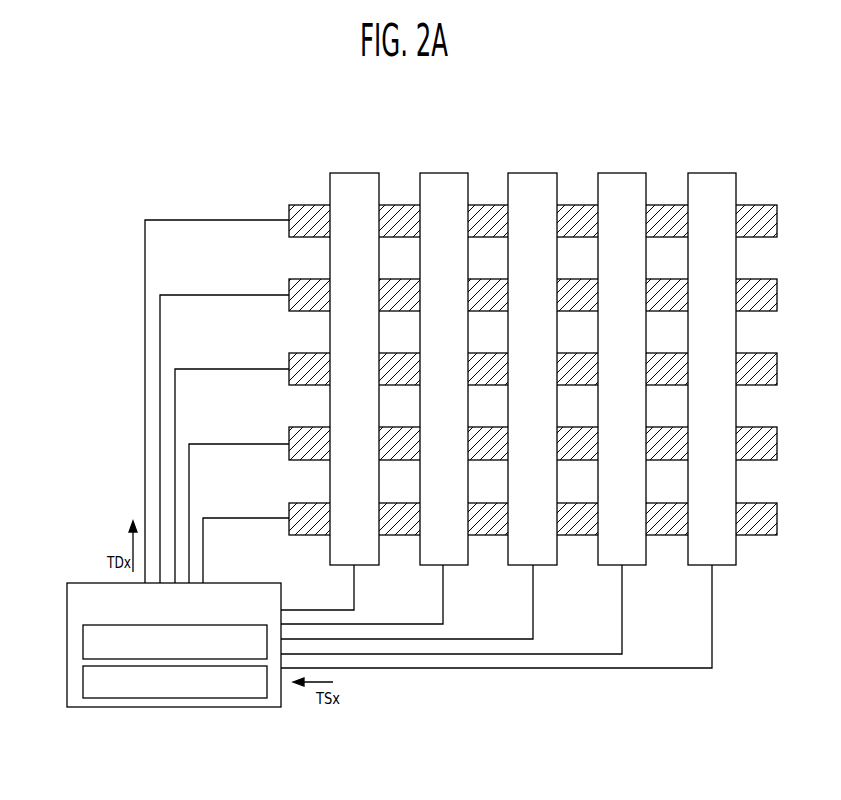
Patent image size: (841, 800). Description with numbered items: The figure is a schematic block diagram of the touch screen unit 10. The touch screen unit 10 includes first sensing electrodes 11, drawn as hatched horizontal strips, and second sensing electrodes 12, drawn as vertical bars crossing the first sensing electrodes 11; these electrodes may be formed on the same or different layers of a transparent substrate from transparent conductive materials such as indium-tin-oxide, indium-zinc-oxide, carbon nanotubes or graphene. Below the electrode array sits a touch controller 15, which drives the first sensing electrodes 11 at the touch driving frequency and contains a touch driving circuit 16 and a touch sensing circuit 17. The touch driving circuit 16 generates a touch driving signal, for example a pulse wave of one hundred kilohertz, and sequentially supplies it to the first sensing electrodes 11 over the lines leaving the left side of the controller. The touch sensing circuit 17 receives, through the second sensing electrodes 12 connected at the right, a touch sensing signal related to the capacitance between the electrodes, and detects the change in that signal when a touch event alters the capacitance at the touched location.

The touch screen unit 10 is at (451, 392).
The first sensing electrodes 11 is at (290, 207).
The second sensing electrodes 12 is at (355, 172).
The touch controller 15 is at (153, 669).
The touch driving circuit 16 is at (83, 641).
The touch sensing circuit 17 is at (83, 683).